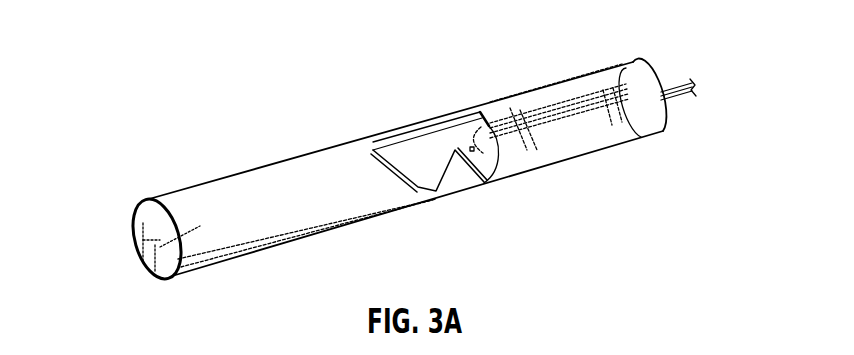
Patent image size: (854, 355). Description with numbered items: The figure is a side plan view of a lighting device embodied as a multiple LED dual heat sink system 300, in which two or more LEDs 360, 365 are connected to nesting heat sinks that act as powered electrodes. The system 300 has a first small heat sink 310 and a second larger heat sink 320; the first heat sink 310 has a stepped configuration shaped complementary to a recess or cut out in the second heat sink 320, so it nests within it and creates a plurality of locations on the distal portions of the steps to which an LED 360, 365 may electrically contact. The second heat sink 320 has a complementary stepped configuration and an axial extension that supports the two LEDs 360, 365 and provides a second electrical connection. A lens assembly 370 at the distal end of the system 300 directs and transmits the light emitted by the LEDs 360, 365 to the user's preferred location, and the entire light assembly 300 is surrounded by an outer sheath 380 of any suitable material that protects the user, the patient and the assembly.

The multiple LED dual heat sink system 300 is at (397, 150).
The first small heat sink 310 is at (442, 140).
The second larger heat sink 320 is at (565, 152).
The LED 360 is at (372, 150).
The LED 365 is at (486, 182).
The lens assembly 370 is at (142, 250).
The outer sheath 380 is at (641, 64).